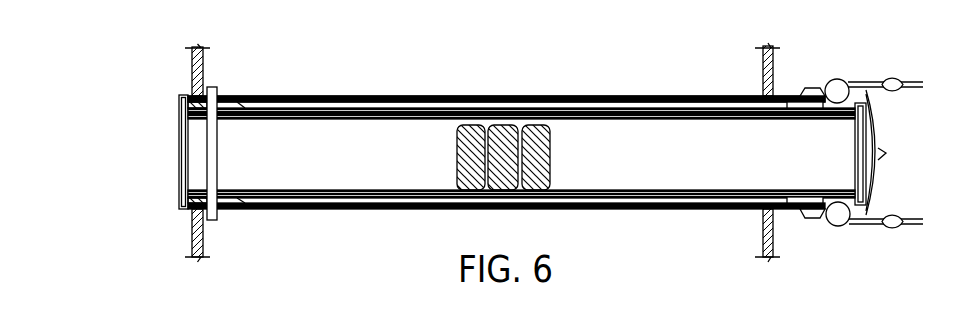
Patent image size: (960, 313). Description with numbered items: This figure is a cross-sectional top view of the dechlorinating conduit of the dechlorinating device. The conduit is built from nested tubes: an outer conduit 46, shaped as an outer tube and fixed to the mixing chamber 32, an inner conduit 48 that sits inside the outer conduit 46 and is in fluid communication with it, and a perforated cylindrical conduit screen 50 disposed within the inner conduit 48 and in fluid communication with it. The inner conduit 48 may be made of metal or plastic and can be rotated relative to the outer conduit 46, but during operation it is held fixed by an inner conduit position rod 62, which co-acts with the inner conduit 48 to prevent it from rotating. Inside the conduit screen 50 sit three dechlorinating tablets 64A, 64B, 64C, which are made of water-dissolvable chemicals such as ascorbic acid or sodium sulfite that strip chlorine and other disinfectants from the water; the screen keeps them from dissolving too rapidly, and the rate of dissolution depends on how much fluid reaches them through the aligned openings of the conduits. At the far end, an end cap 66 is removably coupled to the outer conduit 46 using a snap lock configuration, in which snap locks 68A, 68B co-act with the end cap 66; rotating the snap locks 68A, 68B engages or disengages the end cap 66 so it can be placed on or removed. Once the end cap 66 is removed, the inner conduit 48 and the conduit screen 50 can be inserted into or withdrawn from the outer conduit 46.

The mixing chamber 32 is at (774, 62).
The outer conduit 46 is at (708, 97).
The inner conduit 48 is at (437, 107).
The conduit screen 50 is at (580, 120).
The inner conduit position rod 62 is at (207, 175).
The dechlorinating tablet 64A is at (455, 183).
The dechlorinating tablet 64B is at (497, 187).
The dechlorinating tablet 64C is at (550, 185).
The end cap 66 is at (874, 140).
The snap lock 68A is at (883, 78).
The snap lock 68B is at (866, 228).